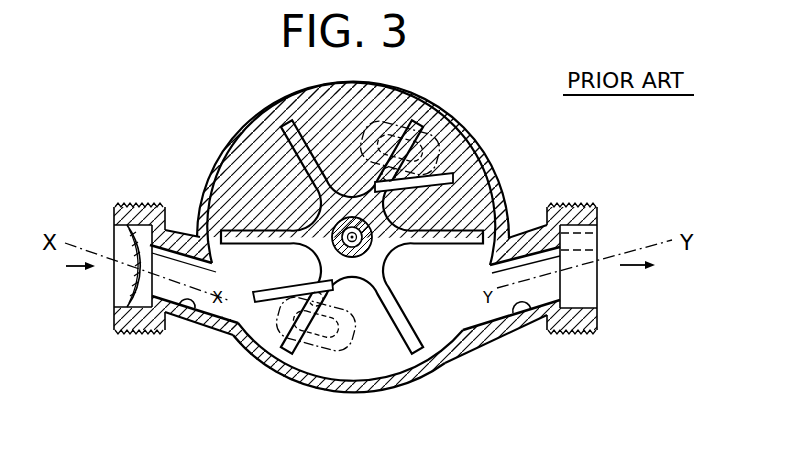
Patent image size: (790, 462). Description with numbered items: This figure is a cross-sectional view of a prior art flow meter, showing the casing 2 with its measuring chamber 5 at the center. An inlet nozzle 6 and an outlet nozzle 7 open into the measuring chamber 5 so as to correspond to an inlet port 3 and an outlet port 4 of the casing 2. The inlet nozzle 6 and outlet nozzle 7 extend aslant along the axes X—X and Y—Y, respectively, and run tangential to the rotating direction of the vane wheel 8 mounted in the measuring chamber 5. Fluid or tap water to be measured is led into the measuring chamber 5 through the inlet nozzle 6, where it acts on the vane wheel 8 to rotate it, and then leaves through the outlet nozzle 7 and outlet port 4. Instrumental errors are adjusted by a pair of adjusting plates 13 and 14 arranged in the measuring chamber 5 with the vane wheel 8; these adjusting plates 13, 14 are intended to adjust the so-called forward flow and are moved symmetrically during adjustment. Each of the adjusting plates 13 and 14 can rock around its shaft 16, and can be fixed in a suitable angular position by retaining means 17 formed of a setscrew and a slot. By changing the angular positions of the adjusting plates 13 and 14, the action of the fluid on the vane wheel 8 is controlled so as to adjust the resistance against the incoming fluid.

The casing 2 is at (470, 141).
The inlet port 3 is at (113, 325).
The outlet port 4 is at (595, 303).
The measuring chamber 5 is at (373, 362).
The inlet nozzle 6 is at (187, 309).
The outlet nozzle 7 is at (526, 313).
The vane wheel 8 is at (352, 272).
The adjusting plate 13 is at (333, 291).
The adjusting plate 14 is at (423, 188).
The shaft 16 is at (372, 172).
The retaining means 17 is at (432, 141).